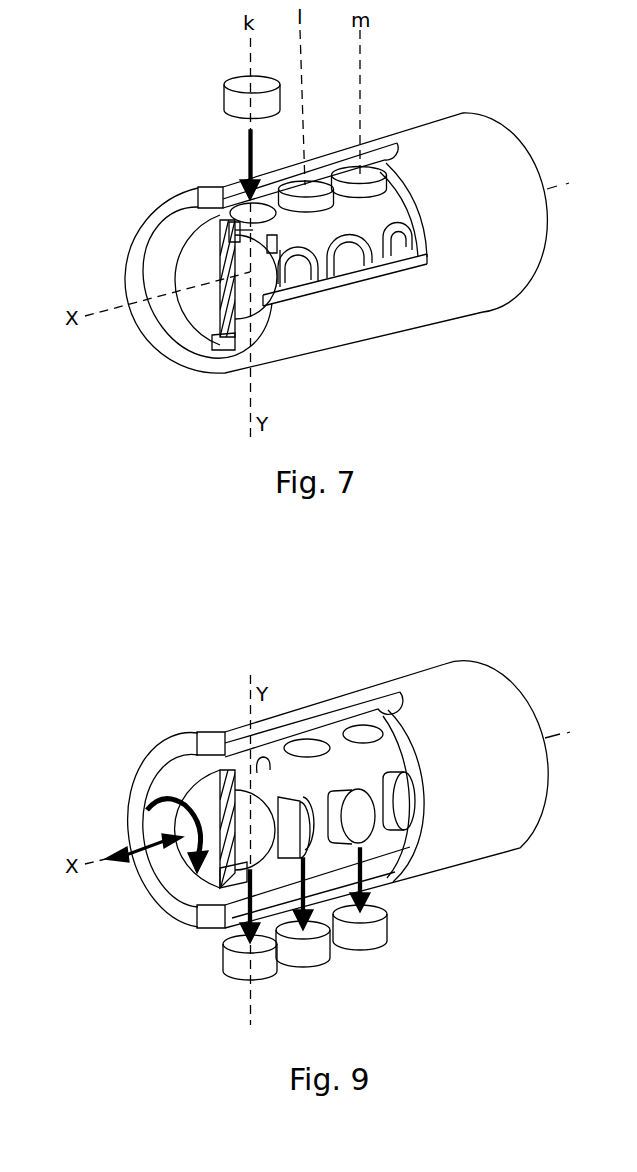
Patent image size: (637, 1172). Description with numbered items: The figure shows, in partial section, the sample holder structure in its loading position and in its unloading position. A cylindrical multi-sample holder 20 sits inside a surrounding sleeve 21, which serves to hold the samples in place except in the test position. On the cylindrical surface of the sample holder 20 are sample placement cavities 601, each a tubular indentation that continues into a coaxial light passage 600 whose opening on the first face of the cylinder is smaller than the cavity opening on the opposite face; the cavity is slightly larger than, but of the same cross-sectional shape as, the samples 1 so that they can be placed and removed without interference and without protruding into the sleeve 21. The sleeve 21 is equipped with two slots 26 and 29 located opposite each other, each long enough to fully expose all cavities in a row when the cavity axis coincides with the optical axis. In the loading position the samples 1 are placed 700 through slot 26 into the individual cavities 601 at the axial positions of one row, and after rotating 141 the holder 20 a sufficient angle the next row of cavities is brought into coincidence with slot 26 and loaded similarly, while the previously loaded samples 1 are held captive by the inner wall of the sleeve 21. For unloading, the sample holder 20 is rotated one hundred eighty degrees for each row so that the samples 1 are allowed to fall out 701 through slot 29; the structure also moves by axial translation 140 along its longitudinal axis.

In FIG. 7, the sample 1 is at (237, 107).
In FIG. 9, the sample 1 is at (260, 970).
In FIG. 7, the sample holder 20 is at (202, 310).
In FIG. 9, the sample holder 20 is at (350, 767).
In FIG. 7, the sleeve 21 is at (192, 368).
In FIG. 9, the sleeve 21 is at (150, 758).
In FIG. 7, the slot 26 is at (390, 147).
In FIG. 9, the slot 26 is at (237, 730).
In FIG. 7, the slot 29 is at (227, 352).
In FIG. 9, the slot 29 is at (377, 867).
In FIG. 7, the light passage 600 is at (245, 263).
In FIG. 9, the light passage 600 is at (260, 763).
In FIG. 7, the sample placement cavity 601 is at (242, 218).
In FIG. 9, the sample placement cavity 601 is at (237, 863).
In FIG. 7, the placing of samples 700 is at (245, 145).
In FIG. 9, the falling out of samples 701 is at (358, 883).
In FIG. 9, the axial translation 140 is at (132, 843).
In FIG. 9, the rotating 141 is at (197, 835).